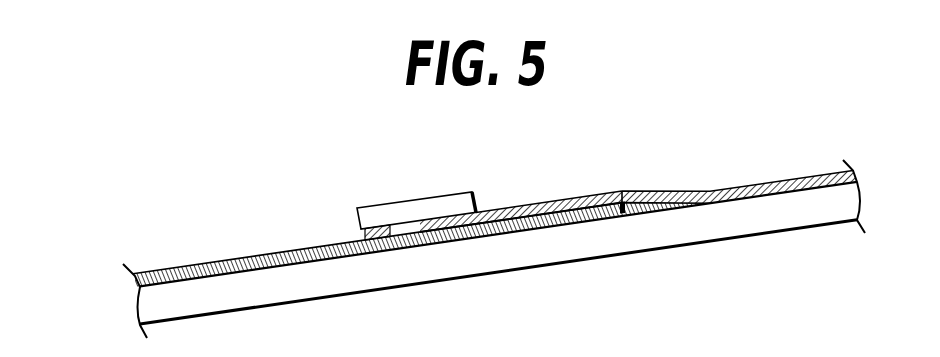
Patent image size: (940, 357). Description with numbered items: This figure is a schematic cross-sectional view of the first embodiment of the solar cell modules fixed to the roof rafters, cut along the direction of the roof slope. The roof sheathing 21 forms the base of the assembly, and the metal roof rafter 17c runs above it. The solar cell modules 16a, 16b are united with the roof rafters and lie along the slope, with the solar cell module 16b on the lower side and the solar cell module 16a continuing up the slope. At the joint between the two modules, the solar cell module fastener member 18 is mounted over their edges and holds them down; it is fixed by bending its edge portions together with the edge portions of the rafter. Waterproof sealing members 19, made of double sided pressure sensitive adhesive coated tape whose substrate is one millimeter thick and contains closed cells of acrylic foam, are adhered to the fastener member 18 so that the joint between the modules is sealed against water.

The solar cell module 16a is at (600, 194).
The solar cell module 16b is at (257, 256).
The metal roof rafter 17c is at (545, 228).
The solar cell module fastener member 18 is at (420, 203).
The waterproof sealing member 19 is at (477, 212).
The roof sheathing 21 is at (407, 268).